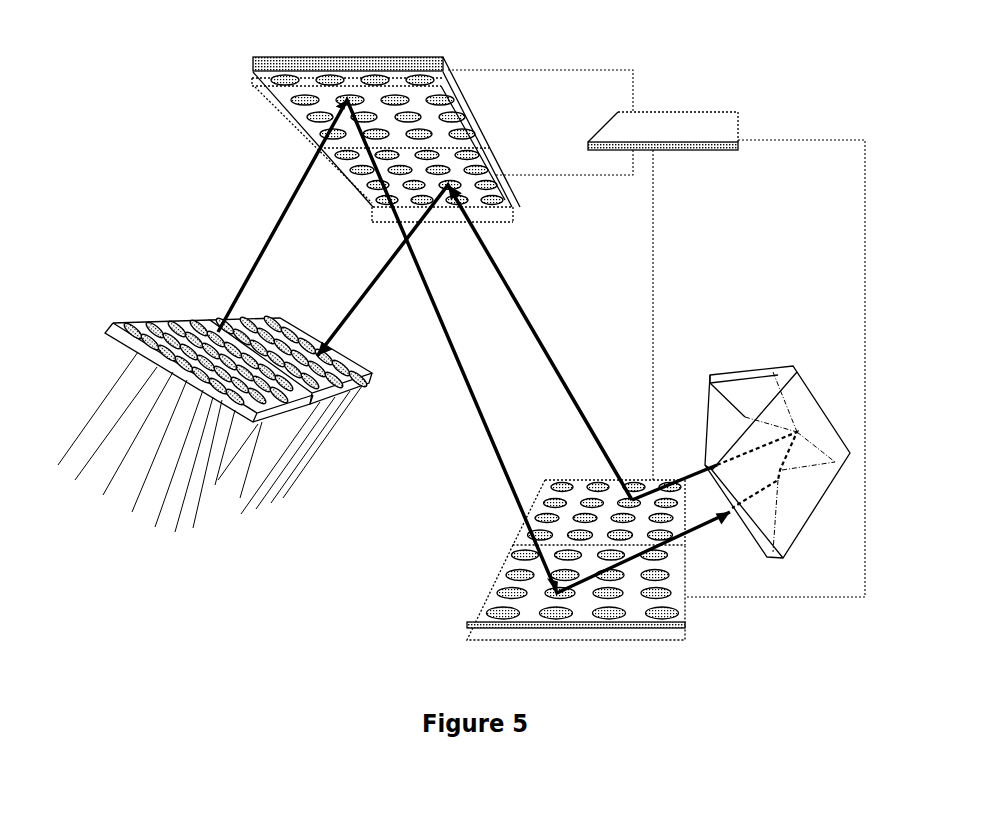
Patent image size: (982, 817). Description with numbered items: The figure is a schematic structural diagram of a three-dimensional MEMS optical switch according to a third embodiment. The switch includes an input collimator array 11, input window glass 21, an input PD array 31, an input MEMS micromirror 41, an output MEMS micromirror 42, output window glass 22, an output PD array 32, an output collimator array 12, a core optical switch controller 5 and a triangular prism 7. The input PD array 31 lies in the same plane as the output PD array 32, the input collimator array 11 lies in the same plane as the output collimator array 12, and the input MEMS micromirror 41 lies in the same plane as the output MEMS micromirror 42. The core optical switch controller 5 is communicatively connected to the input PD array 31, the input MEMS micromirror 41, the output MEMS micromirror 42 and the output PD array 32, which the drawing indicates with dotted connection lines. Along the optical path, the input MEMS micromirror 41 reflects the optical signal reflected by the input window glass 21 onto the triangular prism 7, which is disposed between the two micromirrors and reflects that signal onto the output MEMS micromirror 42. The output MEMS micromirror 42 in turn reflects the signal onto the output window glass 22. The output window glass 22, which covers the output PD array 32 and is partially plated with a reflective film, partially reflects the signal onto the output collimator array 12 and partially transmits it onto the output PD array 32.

The core optical switch controller 5 is at (670, 112).
The triangular prism 7 is at (728, 372).
The input collimator array 11 is at (142, 320).
The output collimator array 12 is at (368, 382).
The input window glass 21 is at (277, 106).
The output window glass 22 is at (375, 210).
The input PD array 31 is at (277, 62).
The output PD array 32 is at (518, 205).
The input MEMS micromirror 41 is at (490, 597).
The output MEMS micromirror 42 is at (520, 523).